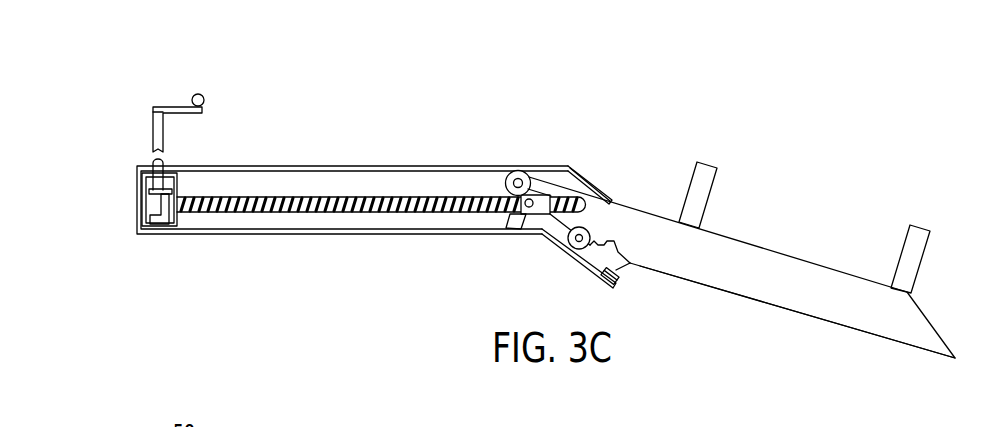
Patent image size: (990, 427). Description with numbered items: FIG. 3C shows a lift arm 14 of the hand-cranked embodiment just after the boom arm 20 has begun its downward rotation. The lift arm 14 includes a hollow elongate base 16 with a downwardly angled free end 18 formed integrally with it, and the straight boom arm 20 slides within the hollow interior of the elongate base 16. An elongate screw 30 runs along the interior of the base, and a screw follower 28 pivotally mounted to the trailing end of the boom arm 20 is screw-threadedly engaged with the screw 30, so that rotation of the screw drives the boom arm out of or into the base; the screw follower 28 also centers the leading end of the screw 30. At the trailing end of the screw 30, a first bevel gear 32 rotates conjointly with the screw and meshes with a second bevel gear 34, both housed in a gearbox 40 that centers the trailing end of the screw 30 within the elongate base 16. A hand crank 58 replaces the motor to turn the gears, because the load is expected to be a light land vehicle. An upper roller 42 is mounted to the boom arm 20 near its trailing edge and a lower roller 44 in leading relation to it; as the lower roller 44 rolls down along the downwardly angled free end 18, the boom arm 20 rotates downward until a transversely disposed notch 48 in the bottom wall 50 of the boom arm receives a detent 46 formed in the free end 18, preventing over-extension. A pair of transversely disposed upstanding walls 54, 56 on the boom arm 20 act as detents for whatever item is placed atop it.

The lift arm 14 is at (619, 110).
The elongate base 16 is at (383, 166).
The downwardly angled free end 18 is at (600, 190).
The boom arm 20 is at (803, 259).
The screw follower 28 is at (566, 188).
The elongate screw 30 is at (317, 197).
The first bevel gear 32 is at (153, 216).
The second bevel gear 34 is at (152, 204).
The gearbox 40 is at (178, 186).
The upper roller 42 is at (523, 171).
The lower roller 44 is at (565, 243).
The detent 46 is at (617, 285).
The notch 48 is at (611, 255).
The bottom wall 50 is at (772, 305).
The transversely disposed wall 54 is at (712, 185).
The transversely disposed wall 56 is at (898, 252).
The hand crank 58 is at (177, 105).